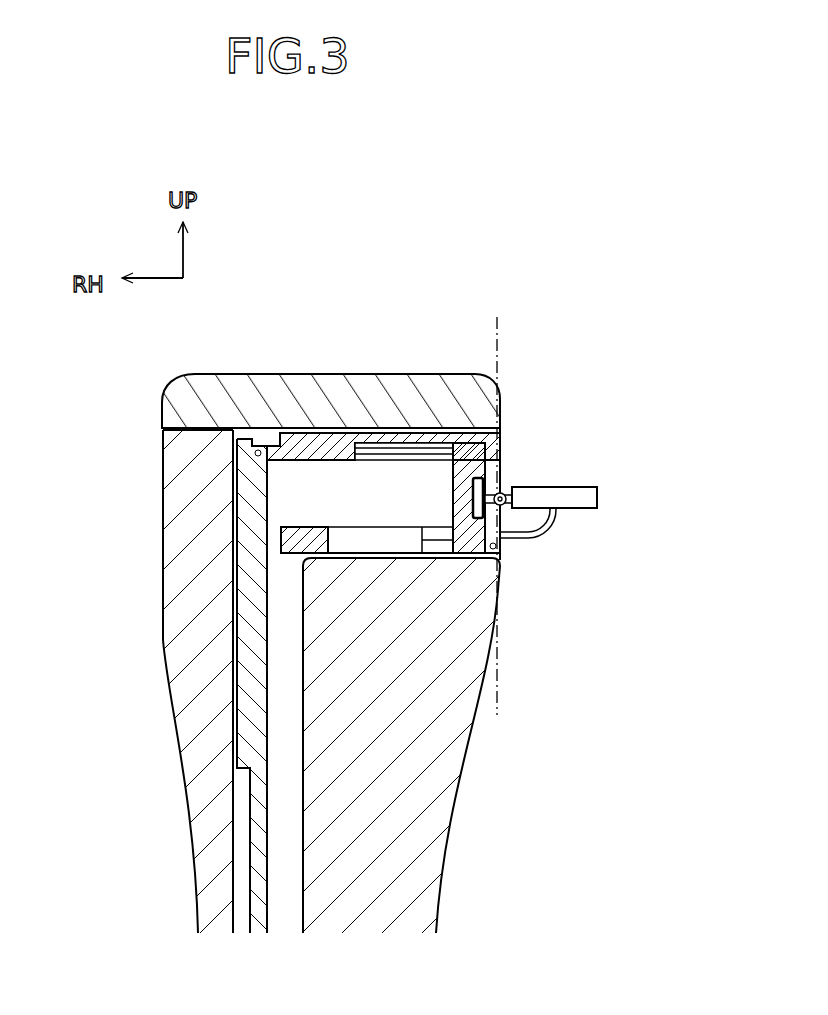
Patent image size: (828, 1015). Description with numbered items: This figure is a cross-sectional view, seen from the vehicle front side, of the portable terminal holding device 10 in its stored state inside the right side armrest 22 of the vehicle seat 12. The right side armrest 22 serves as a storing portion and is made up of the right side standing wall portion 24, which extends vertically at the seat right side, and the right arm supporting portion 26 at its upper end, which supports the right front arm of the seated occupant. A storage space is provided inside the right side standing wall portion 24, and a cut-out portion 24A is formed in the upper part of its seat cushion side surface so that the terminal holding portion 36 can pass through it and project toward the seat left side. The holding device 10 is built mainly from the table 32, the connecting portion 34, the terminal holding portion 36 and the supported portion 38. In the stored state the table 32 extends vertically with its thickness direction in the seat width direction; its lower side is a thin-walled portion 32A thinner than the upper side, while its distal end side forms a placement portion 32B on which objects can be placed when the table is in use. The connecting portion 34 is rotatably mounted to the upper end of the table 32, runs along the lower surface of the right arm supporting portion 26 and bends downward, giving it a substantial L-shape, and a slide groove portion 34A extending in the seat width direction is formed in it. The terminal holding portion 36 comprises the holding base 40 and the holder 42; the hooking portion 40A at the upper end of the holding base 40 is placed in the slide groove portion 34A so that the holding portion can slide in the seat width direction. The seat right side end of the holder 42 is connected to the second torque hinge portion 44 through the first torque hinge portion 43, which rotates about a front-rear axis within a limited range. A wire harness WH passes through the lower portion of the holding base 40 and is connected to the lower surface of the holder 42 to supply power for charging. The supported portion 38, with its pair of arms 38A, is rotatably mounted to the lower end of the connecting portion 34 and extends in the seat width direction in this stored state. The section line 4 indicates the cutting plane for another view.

The section line 4- 4 is at (500, 326).
The portable terminal holding device 10 is at (571, 427).
The vehicle seat 12 is at (382, 292).
The right side armrest 22 is at (150, 402).
The right side standing wall portion 24 is at (162, 642).
The cut-out portion 24A is at (505, 558).
The right arm supporting portion 26 is at (285, 373).
The table 32 is at (249, 808).
The thin-walled portion 32A is at (250, 900).
The placement portion 32B is at (237, 507).
The connecting portion 34 is at (370, 432).
The slide groove portion 34A is at (405, 443).
The terminal holding portion 36 is at (536, 471).
The supported portion 38 is at (299, 525).
The arms 38A is at (334, 540).
The holding base 40 is at (451, 463).
The hooking portion 40A is at (463, 442).
The holder 42 is at (600, 501).
The first torque hinge portion 43 is at (485, 486).
The second torque hinge portion 44 is at (498, 512).
The wire harness WH is at (535, 530).